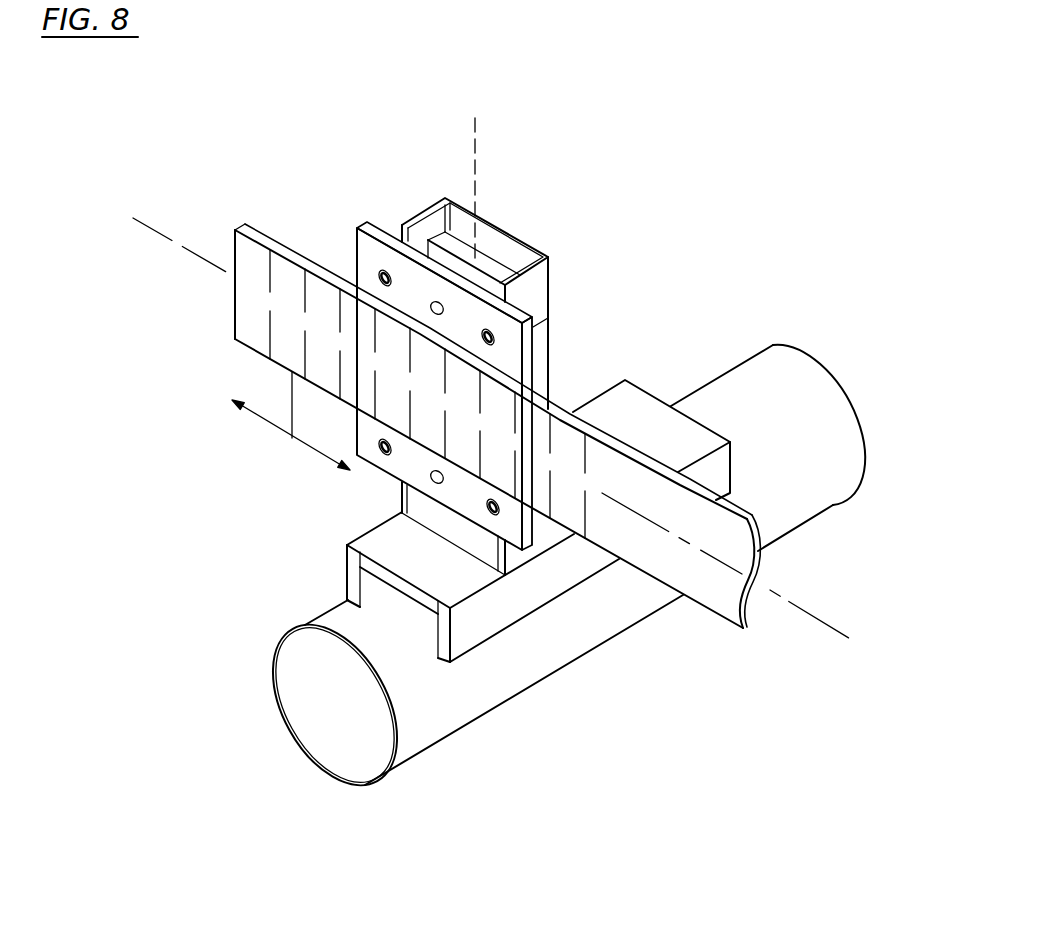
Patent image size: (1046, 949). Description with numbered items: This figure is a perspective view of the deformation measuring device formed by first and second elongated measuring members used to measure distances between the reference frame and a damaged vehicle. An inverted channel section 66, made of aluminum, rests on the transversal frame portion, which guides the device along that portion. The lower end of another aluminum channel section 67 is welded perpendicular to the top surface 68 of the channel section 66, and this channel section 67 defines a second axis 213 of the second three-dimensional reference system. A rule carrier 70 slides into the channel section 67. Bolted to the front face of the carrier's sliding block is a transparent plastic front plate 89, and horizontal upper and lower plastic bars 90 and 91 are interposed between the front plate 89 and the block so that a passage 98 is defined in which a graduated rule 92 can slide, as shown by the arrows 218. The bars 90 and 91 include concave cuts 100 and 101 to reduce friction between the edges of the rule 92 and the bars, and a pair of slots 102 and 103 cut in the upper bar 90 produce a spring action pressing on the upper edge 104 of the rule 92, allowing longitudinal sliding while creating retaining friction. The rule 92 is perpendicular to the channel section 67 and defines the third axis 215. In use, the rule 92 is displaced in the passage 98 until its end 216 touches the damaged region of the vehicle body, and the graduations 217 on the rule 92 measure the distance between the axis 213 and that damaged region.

The rule carrier 70 is at (285, 114).
The second axis 213 is at (478, 128).
The upper edge of the rule 104 is at (250, 238).
The front plate 89 is at (383, 226).
The slot 102 is at (356, 287).
The concave cut 100 is at (402, 321).
The channel section 67 is at (545, 285).
The third axis 215 is at (145, 234).
The graduated rule 92 is at (258, 313).
The upper bar 90 is at (551, 343).
The end of the rule 216 is at (233, 325).
The slot 103 is at (546, 347).
The passage 98 is at (578, 403).
The graduations 217 is at (322, 355).
The arrows 218 is at (290, 436).
The top surface 68 is at (373, 542).
The concave cut 101 is at (423, 440).
The inverted channel section 66 is at (342, 575).
The lower bar 91 is at (532, 532).